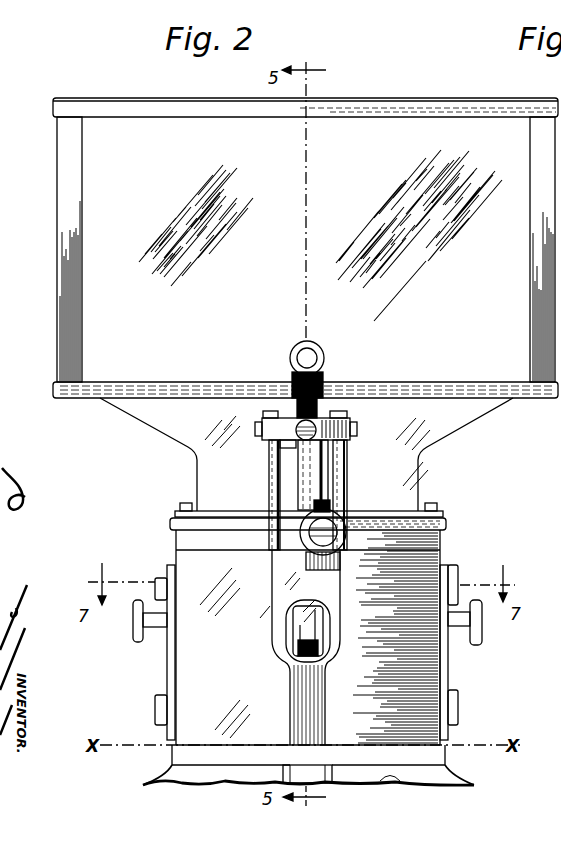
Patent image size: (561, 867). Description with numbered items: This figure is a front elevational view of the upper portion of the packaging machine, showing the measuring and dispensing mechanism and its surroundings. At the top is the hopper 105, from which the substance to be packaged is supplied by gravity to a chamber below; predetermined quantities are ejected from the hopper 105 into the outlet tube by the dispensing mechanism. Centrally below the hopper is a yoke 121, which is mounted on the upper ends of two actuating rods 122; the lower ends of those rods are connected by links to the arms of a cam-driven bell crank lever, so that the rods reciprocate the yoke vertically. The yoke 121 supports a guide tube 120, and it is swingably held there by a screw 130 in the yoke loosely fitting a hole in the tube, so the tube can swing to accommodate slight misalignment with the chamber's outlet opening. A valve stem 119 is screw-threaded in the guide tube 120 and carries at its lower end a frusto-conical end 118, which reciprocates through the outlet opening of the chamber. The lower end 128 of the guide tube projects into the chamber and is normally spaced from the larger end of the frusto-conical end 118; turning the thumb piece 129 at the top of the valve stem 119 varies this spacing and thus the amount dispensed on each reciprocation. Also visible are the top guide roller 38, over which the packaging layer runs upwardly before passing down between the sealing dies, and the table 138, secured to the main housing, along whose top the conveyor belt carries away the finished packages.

The hopper 105 is at (88, 304).
The thumb piece 129 is at (287, 368).
The yoke 121 is at (348, 428).
The actuating rods 122 is at (348, 446).
The screw 130 is at (280, 446).
The guide tube 120 is at (318, 470).
The top guide roller 38 is at (346, 520).
The table 138 is at (560, 536).
The end of the guide tube 128 is at (290, 638).
The frusto-conical end 118 is at (303, 655).
The valve stem 119 is at (326, 657).